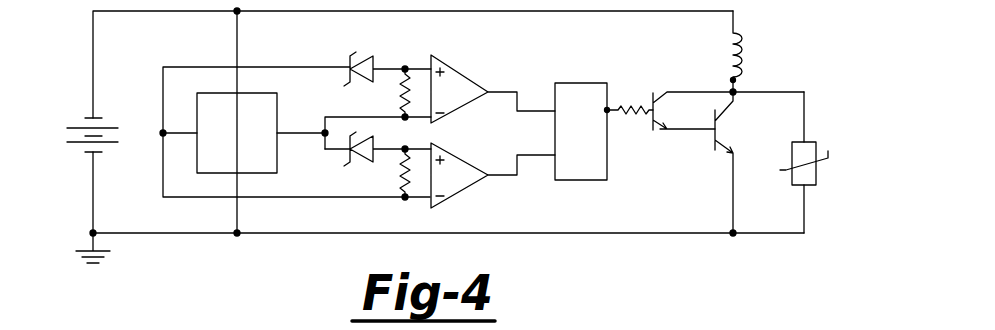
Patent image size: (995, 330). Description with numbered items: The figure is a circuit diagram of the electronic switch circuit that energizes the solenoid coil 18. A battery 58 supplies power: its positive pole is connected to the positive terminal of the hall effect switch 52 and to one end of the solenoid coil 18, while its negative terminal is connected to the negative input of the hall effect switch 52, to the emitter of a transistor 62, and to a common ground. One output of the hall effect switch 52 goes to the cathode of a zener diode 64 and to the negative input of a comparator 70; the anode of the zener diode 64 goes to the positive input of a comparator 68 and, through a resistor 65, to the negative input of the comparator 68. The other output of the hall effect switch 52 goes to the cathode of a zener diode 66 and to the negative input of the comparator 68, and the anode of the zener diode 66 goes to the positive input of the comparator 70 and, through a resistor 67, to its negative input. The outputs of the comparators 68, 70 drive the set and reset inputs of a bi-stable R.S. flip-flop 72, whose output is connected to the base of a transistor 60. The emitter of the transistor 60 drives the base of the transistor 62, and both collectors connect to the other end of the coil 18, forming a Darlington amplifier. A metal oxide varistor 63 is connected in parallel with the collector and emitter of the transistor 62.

The solenoid coil 18 is at (745, 70).
The hall effect switch 52 is at (265, 176).
The battery 58 is at (74, 151).
The transistor 60 is at (660, 90).
The transistor 62 is at (710, 136).
The metal oxide varistor 63 is at (817, 180).
The zener diode 64 is at (356, 55).
The resistor 65 is at (400, 96).
The zener diode 66 is at (347, 166).
The resistor 67 is at (400, 183).
The comparator 68 is at (466, 72).
The comparator 70 is at (464, 191).
The R.S. flip-flop 72 is at (580, 181).